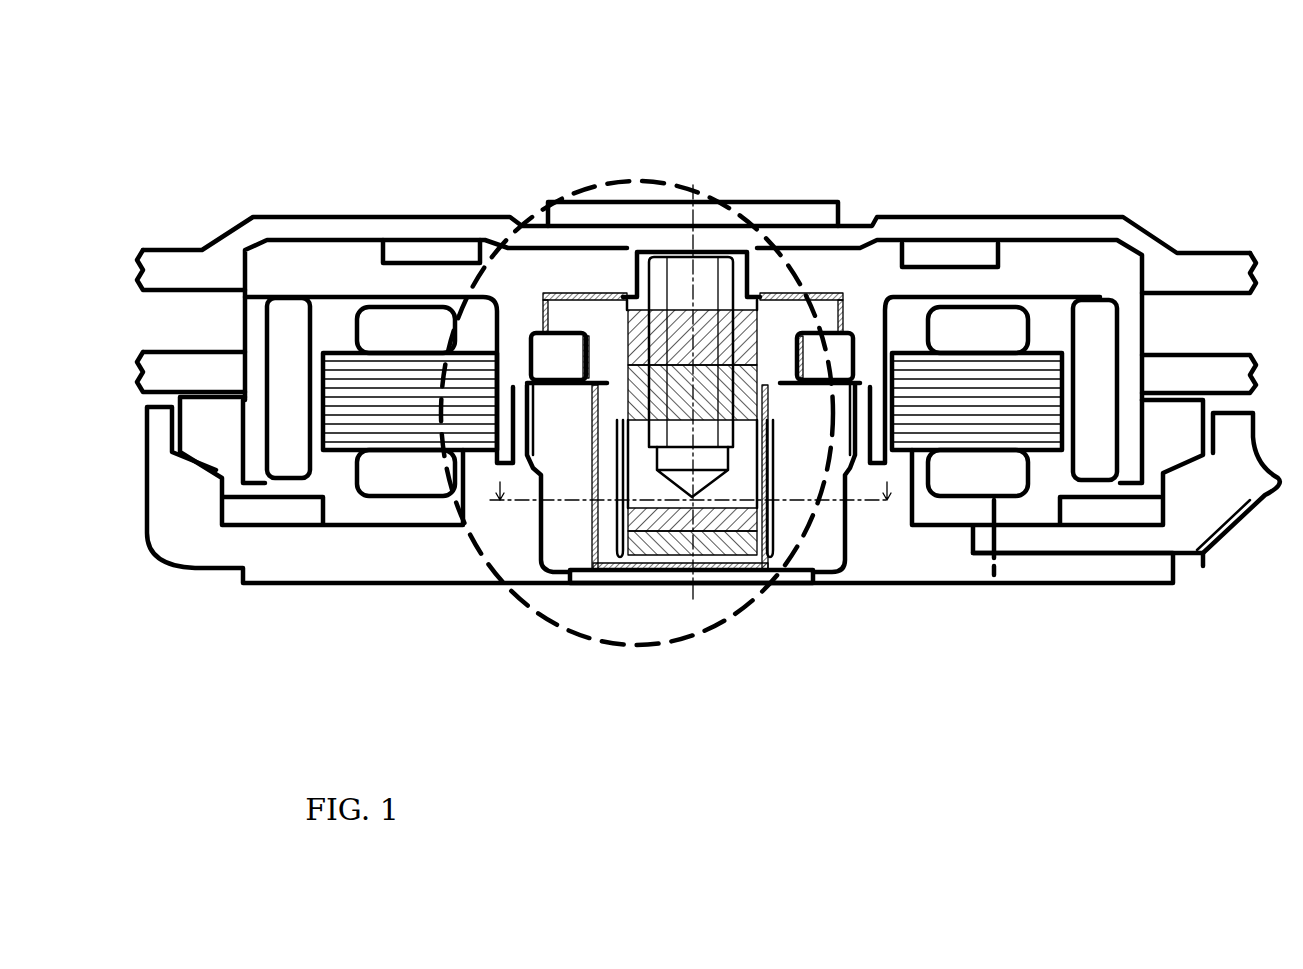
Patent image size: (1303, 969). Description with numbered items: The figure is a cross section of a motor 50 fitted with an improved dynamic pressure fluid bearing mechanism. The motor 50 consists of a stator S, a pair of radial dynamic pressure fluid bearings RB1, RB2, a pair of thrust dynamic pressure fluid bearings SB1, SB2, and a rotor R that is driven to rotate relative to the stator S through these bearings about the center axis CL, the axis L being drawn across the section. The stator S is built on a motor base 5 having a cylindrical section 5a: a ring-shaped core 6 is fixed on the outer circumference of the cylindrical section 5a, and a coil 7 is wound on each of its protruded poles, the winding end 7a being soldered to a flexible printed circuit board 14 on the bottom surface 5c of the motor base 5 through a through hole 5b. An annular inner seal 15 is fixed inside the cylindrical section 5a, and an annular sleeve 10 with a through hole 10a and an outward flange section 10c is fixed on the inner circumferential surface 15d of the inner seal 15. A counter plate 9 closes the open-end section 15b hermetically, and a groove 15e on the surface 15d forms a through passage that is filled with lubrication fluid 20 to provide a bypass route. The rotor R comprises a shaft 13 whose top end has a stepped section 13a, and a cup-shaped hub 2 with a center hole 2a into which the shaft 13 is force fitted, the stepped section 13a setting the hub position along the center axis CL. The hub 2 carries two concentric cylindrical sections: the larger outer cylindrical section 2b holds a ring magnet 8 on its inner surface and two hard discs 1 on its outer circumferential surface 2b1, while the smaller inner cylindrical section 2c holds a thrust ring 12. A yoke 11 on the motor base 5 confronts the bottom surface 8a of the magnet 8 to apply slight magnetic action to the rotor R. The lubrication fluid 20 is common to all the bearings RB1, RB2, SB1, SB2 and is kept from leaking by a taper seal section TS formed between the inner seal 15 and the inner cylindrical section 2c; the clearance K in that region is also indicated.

The hard disc 1 is at (1215, 275).
The hub 2 is at (905, 227).
The center hole 2a is at (627, 292).
The outer cylindrical section 2b is at (262, 332).
The outer circumferential surface 2b1 is at (252, 317).
The inner cylindrical section 2c is at (872, 345).
The motor base 5 is at (257, 580).
The cylindrical section 5a is at (458, 535).
The through hole 5b is at (1012, 540).
The bottom surface 5c is at (1147, 545).
The core 6 is at (347, 430).
The coil 7 is at (407, 483).
The winding end 7a is at (1042, 505).
The magnet 8 is at (287, 318).
The bottom surface 8a is at (318, 333).
The counter plate 9 is at (717, 578).
The sleeve 10 is at (623, 560).
The through hole 10a is at (603, 575).
The flange section 10c is at (847, 342).
The yoke 11 is at (1107, 510).
The thrust ring 12 is at (530, 352).
The shaft 13 is at (752, 340).
The stepped section 13a is at (652, 295).
The flexible printed circuit board 14 is at (1192, 557).
The inner seal 15 is at (552, 530).
The open-end section 15b is at (692, 575).
The inner circumferential surface 15d is at (836, 520).
The groove 15e is at (537, 520).
The lubrication fluid 20 is at (492, 535).
The motor 50 is at (1133, 160).
The thrust dynamic pressure fluid bearing SB1 is at (578, 307).
The thrust dynamic pressure fluid bearing SB2 is at (548, 350).
The radial dynamic pressure fluid bearing RB1 is at (838, 570).
The radial dynamic pressure fluid bearing RB2 is at (766, 295).
The gap K is at (545, 345).
The taper seal section TS is at (880, 545).
The center axis CL is at (693, 379).
The axis line L is at (689, 481).
The rotor R is at (147, 82).
The stator S is at (203, 692).